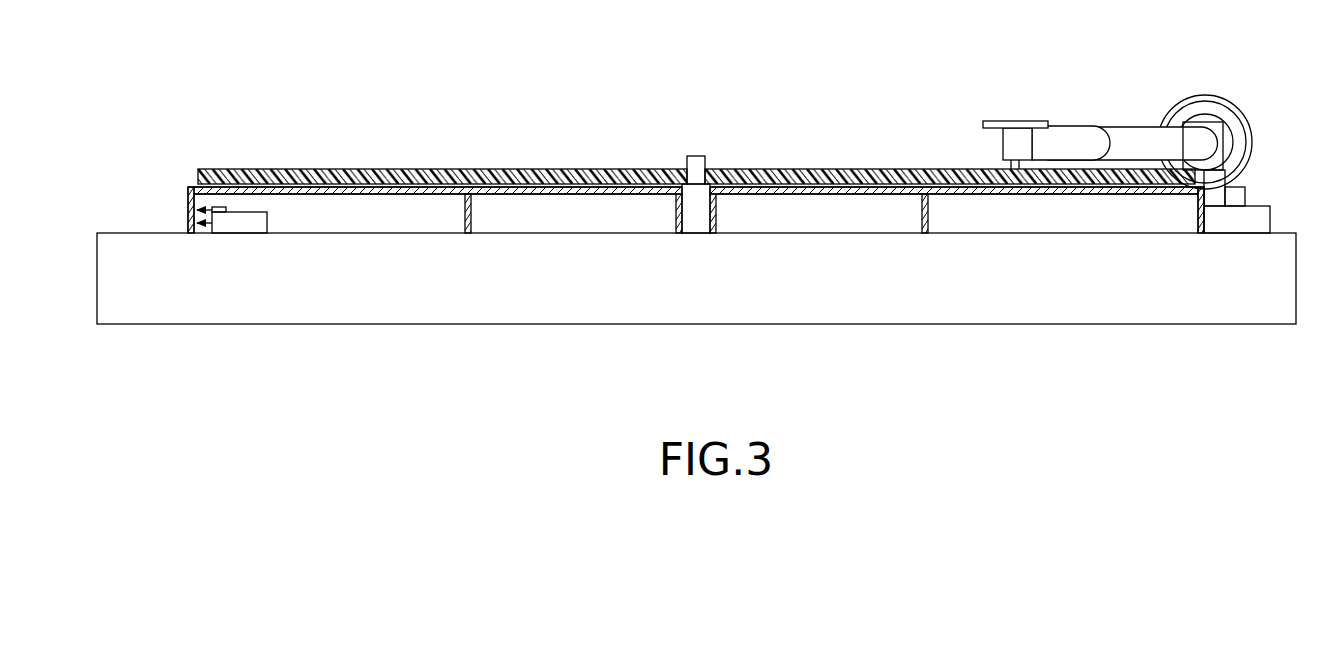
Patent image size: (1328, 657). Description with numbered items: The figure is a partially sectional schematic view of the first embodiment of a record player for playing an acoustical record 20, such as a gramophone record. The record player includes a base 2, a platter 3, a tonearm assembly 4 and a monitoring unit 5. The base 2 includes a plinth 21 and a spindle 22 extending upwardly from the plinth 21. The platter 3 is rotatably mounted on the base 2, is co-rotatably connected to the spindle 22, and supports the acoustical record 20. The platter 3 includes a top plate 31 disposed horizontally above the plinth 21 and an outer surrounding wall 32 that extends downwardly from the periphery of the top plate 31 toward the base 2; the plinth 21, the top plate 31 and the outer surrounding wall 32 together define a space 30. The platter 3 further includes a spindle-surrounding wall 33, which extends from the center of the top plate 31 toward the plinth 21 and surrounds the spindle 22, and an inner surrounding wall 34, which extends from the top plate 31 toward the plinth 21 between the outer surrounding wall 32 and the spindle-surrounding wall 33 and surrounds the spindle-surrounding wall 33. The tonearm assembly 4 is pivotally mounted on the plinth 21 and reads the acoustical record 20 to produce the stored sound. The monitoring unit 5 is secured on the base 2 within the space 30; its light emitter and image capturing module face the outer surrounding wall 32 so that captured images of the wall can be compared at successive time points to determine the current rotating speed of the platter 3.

The base 2 is at (696, 165).
The acoustical record 20 is at (570, 176).
The plinth 21 is at (757, 262).
The spindle 22 is at (695, 156).
The platter 3 is at (176, 186).
The space 30 is at (400, 215).
The top plate 31 is at (320, 192).
The outer surrounding wall 32 is at (190, 200).
The spindle-surrounding wall 33 is at (678, 220).
The inner surrounding wall 34 is at (465, 222).
The tonearm assembly 4 is at (1066, 135).
The monitoring unit 5 is at (245, 225).